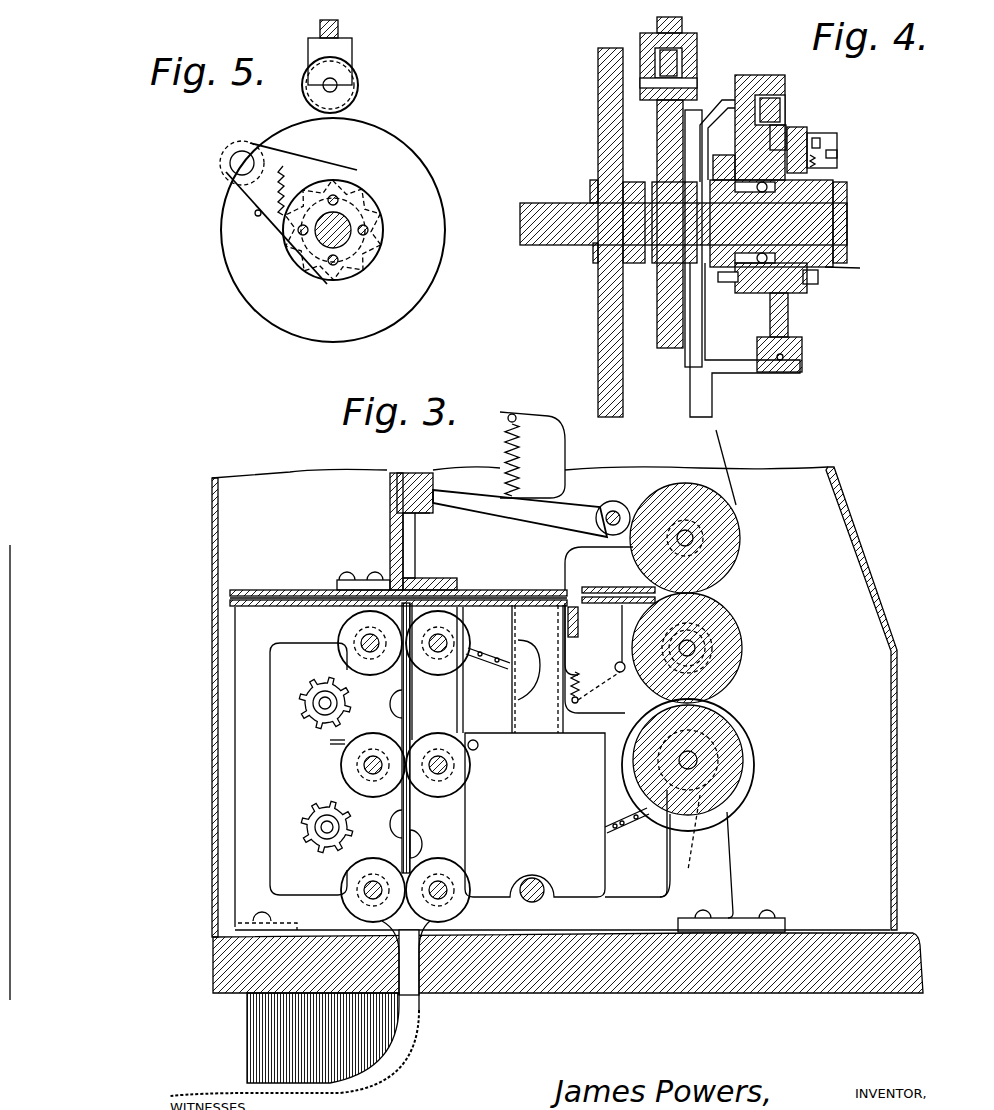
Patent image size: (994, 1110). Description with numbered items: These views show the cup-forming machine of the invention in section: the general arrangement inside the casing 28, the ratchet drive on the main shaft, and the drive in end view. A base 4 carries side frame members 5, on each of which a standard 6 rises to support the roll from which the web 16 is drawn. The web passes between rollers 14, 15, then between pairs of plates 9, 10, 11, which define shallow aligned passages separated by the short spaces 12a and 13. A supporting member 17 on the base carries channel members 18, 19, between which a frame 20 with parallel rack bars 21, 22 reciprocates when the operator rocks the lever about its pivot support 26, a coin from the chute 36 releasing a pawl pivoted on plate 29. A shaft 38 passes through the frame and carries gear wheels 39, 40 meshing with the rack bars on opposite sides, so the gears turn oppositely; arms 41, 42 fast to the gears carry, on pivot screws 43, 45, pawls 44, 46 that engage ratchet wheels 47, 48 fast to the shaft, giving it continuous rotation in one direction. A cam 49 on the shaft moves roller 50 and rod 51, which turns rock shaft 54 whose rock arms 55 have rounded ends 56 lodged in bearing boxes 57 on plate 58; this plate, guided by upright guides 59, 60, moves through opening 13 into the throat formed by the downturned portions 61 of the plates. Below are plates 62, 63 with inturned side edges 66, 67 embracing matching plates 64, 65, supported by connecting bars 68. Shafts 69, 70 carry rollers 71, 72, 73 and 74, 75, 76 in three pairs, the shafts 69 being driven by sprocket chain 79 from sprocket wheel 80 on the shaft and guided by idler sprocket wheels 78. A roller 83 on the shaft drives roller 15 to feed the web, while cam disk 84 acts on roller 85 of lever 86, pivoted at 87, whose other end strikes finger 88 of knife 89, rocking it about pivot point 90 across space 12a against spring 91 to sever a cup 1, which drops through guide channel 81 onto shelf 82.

In FIG. 3, the cup 1 is at (252, 600).
In FIG. 3, the base 4 is at (660, 990).
In FIG. 4, the side frame member 5 is at (605, 375).
In FIG. 3, the side frame member 5 is at (233, 825).
In FIG. 3, the post or standard 6 is at (565, 452).
In FIG. 3, the pair of plates 9 is at (628, 587).
In FIG. 3, the pair of plates 10 is at (493, 590).
In FIG. 3, the pair of plates 11 is at (290, 600).
In FIG. 3, the space 12a is at (582, 590).
In FIG. 3, the space 13 is at (388, 580).
In FIG. 3, the roller 14 is at (736, 560).
In FIG. 3, the roller 15 is at (740, 672).
In FIG. 3, the web of paper 16 is at (722, 452).
In FIG. 4, the supporting member 17 is at (712, 394).
In FIG. 4, the channel member 18 is at (803, 352).
In FIG. 4, the channel member 19 is at (778, 78).
In FIG. 4, the frame 20 is at (777, 118).
In FIG. 4, the rack bar 21 is at (778, 90).
In FIG. 4, the rack bar 22 is at (782, 372).
In FIG. 3, the pivot support 26 is at (540, 898).
In FIG. 3, the casing 28 is at (868, 596).
In FIG. 3, the plate 29 is at (566, 815).
In FIG. 3, the chute 36 is at (537, 669).
In FIG. 5, the shaft 38 is at (345, 237).
In FIG. 4, the shaft 38 is at (563, 238).
In FIG. 3, the shaft 38 is at (700, 762).
In FIG. 4, the gear wheel 39 is at (790, 290).
In FIG. 4, the gear wheel 40 is at (790, 305).
In FIG. 5, the arm 41 is at (283, 158).
In FIG. 4, the arm 41 is at (695, 280).
In FIG. 4, the arm 42 is at (820, 278).
In FIG. 5, the pivot screw 43 is at (238, 166).
In FIG. 5, the pawl 44 is at (318, 153).
In FIG. 4, the pawl 44 is at (722, 160).
In FIG. 4, the pivot screw 45 is at (838, 140).
In FIG. 4, the pawl or dog 46 is at (808, 135).
In FIG. 5, the ratchet wheel 47 is at (369, 274).
In FIG. 4, the ratchet wheel 47 is at (735, 280).
In FIG. 4, the ratchet wheel 48 is at (845, 268).
In FIG. 5, the cam 49 is at (297, 322).
In FIG. 4, the cam 49 is at (668, 348).
In FIG. 5, the roller 50 is at (360, 86).
In FIG. 4, the roller 50 is at (698, 63).
In FIG. 5, the rod 51 is at (340, 30).
In FIG. 4, the rod 51 is at (683, 26).
In FIG. 3, the rock shaft 54 is at (615, 512).
In FIG. 3, the rock arm 55 is at (552, 515).
In FIG. 3, the rounded end 56 is at (412, 473).
In FIG. 3, the bearing box 57 is at (410, 548).
In FIG. 3, the plate 58 is at (408, 550).
In FIG. 3, the upright guide 59 is at (390, 535).
In FIG. 3, the upright guide 60 is at (420, 573).
In FIG. 3, the downturned portion 61 is at (450, 630).
In FIG. 3, the plate 62 is at (418, 715).
In FIG. 3, the plate 63 is at (412, 850).
In FIG. 3, the plate 64 is at (400, 700).
In FIG. 3, the plate 65 is at (400, 824).
In FIG. 3, the inturned side edge 66 is at (400, 712).
In FIG. 3, the inturned side edge 67 is at (406, 855).
In FIG. 3, the connecting bar 68 is at (400, 740).
In FIG. 3, the shaft 69 is at (371, 766).
In FIG. 3, the shaft 70 is at (438, 766).
In FIG. 3, the roller 71 is at (345, 636).
In FIG. 3, the roller 72 is at (345, 772).
In FIG. 3, the roller 73 is at (346, 888).
In FIG. 3, the roller 74 is at (482, 670).
In FIG. 3, the roller 75 is at (470, 770).
In FIG. 3, the roller 76 is at (470, 880).
In FIG. 3, the idler sprocket wheel 78 is at (305, 695).
In FIG. 3, the sprocket chain 79 is at (623, 830).
In FIG. 3, the sprocket wheel 80 is at (688, 855).
In FIG. 3, the guide channel 81 is at (410, 965).
In FIG. 3, the shelf 82 is at (298, 1084).
In FIG. 3, the roller 83 is at (740, 730).
In FIG. 3, the cam disk 84 is at (748, 792).
In FIG. 3, the roller 85 is at (738, 640).
In FIG. 3, the lever 86 is at (655, 690).
In FIG. 3, the pivot 87 is at (620, 662).
In FIG. 3, the finger 88 is at (566, 656).
In FIG. 3, the knife 89 is at (568, 612).
In FIG. 3, the pivot point 90 is at (585, 660).
In FIG. 3, the spring 91 is at (570, 672).